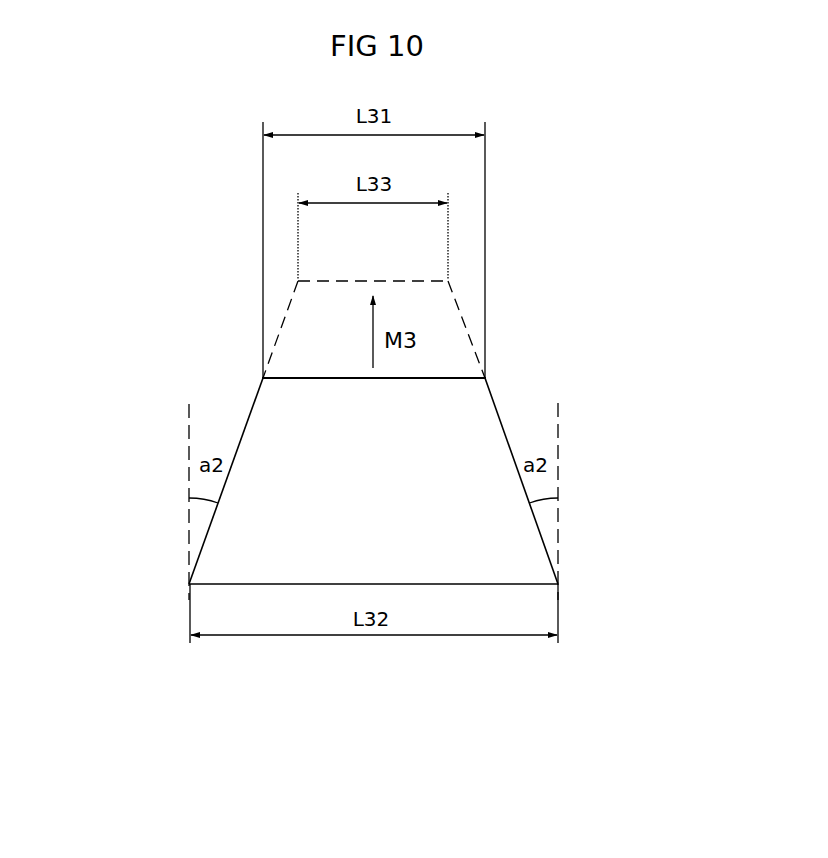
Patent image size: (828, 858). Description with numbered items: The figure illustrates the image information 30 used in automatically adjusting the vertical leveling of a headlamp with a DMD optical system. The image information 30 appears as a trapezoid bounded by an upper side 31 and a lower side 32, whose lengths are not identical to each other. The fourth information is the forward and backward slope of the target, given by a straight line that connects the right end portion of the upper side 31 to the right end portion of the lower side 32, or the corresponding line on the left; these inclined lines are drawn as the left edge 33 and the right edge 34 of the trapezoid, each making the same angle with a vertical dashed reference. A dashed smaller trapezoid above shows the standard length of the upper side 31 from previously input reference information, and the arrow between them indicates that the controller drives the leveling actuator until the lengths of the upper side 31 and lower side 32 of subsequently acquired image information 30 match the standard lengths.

The image information 30 is at (504, 393).
The upper side 31 is at (433, 279).
The lower side 32 is at (297, 585).
The left inclined side 33 is at (245, 428).
The right inclined side 34 is at (503, 425).